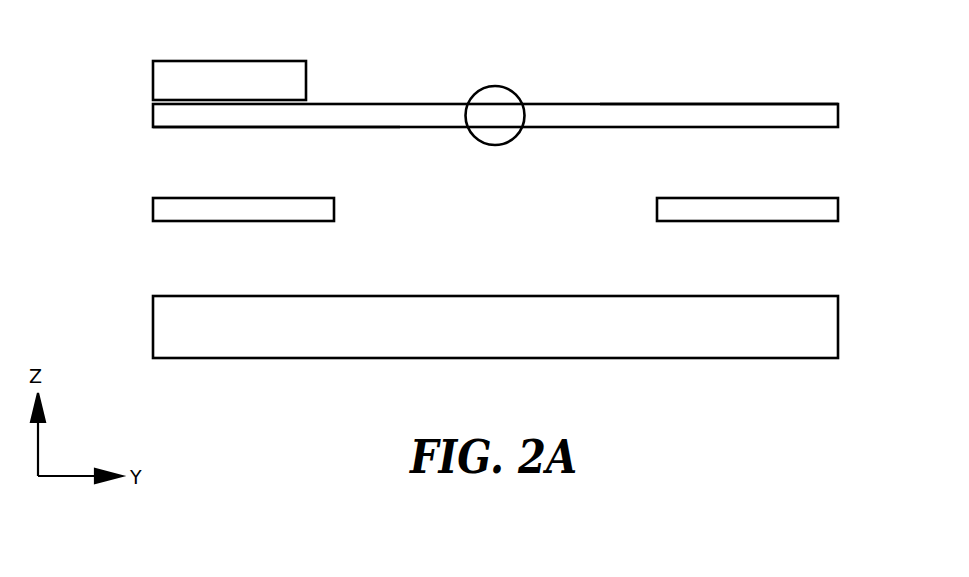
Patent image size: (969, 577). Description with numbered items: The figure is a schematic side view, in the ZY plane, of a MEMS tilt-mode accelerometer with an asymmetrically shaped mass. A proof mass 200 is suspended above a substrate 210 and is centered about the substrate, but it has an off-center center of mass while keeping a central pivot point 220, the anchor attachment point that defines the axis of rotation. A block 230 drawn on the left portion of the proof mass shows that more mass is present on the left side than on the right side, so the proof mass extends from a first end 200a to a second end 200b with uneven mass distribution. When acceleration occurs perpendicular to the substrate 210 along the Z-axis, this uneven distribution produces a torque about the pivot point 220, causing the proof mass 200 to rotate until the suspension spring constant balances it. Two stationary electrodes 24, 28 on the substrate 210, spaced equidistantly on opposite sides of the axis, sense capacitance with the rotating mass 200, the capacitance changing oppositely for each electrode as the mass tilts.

The proof mass 200 is at (618, 86).
The first end of movable member 200a is at (234, 128).
The second end of movable member 200b is at (757, 103).
The central pivot point 220 is at (497, 101).
The block 230 is at (203, 70).
The stationary electrode 24 is at (220, 222).
The stationary electrode 28 is at (723, 222).
The substrate 210 is at (153, 317).